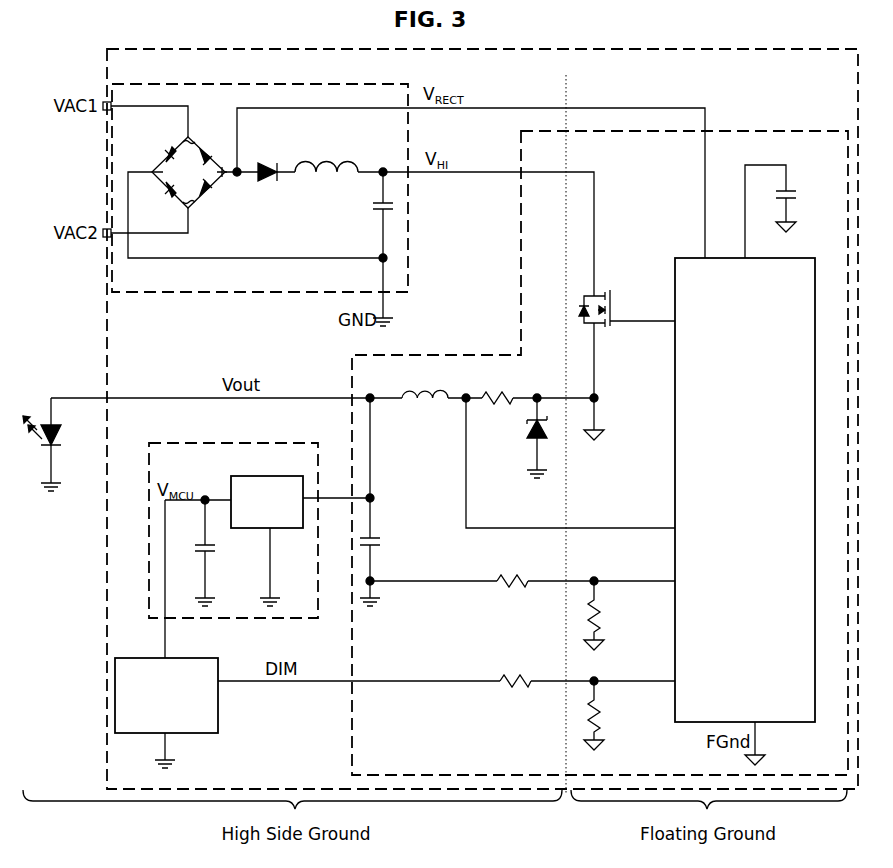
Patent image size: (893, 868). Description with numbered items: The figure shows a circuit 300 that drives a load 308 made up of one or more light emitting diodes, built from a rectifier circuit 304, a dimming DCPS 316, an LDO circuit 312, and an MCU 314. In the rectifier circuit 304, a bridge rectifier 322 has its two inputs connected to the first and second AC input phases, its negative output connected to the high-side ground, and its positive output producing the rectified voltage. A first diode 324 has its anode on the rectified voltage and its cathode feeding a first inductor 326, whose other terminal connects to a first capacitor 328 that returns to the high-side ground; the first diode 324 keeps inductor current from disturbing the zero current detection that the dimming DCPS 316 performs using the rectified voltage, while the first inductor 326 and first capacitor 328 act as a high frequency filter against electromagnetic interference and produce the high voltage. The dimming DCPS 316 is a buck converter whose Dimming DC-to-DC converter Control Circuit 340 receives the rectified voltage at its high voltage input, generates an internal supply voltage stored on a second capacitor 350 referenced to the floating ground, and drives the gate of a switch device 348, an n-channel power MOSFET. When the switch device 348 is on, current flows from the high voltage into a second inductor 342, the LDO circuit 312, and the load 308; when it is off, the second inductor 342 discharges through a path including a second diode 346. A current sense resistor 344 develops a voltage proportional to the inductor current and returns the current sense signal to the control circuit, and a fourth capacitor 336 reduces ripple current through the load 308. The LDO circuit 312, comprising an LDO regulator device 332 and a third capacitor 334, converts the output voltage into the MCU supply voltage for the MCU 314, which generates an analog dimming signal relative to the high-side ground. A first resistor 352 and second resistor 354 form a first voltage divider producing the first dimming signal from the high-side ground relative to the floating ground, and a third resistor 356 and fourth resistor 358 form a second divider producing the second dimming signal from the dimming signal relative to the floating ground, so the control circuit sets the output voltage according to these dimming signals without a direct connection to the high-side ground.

The circuit 300 is at (718, 48).
The rectifier circuit 304 is at (203, 83).
The load 308 is at (61, 441).
The LDO circuit 312 is at (275, 620).
The MCU 314 is at (219, 706).
The dimming DCPS 316 is at (797, 130).
The bridge rectifier 322 is at (178, 142).
The first diode 324 is at (277, 158).
The first inductor 326 is at (337, 161).
The first capacitor 328 is at (372, 211).
The LDO regulator device 332 is at (258, 476).
The third capacitor 334 is at (208, 552).
The fourth capacitor 336 is at (381, 546).
The Dimming DC-to-DC converter Control Circuit 340 is at (797, 258).
The second inductor 342 is at (437, 405).
The current sense resistor 344 is at (497, 393).
The second diode 346 is at (526, 432).
The switch device 348 is at (613, 306).
The second capacitor 350 is at (796, 192).
The first resistor 352 is at (510, 590).
The second resistor 354 is at (600, 612).
The third resistor 356 is at (513, 690).
The fourth resistor 358 is at (600, 712).